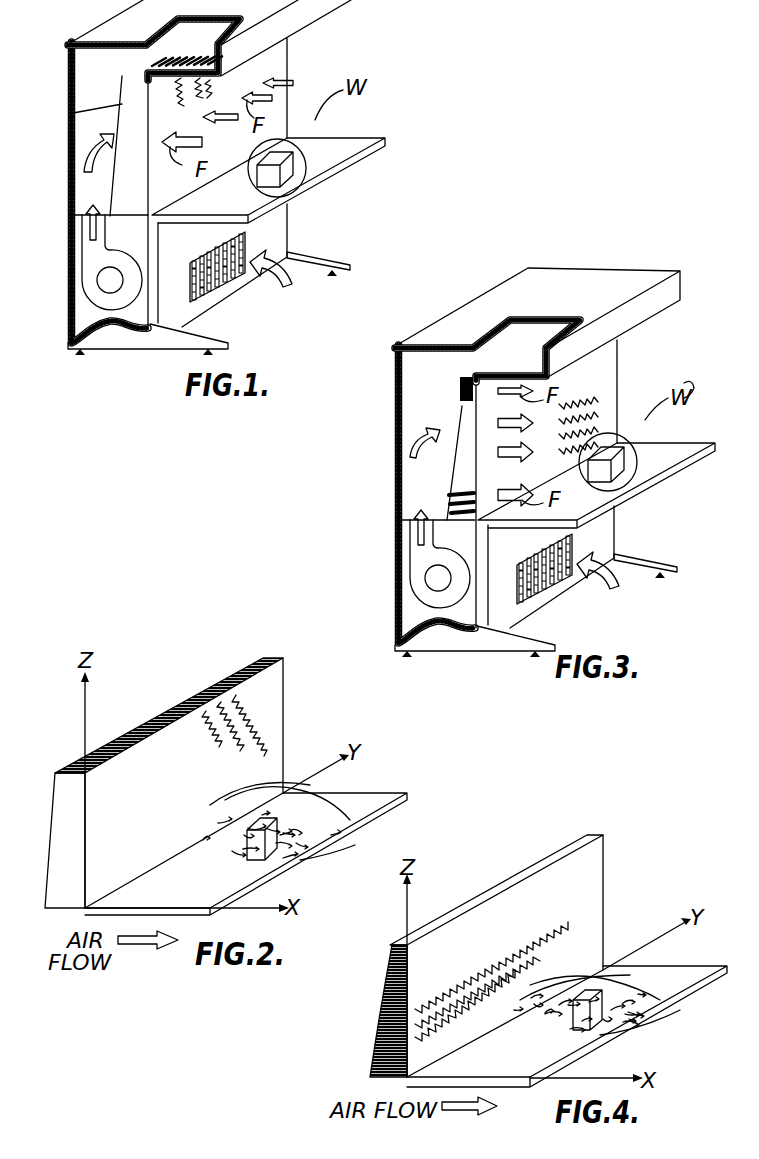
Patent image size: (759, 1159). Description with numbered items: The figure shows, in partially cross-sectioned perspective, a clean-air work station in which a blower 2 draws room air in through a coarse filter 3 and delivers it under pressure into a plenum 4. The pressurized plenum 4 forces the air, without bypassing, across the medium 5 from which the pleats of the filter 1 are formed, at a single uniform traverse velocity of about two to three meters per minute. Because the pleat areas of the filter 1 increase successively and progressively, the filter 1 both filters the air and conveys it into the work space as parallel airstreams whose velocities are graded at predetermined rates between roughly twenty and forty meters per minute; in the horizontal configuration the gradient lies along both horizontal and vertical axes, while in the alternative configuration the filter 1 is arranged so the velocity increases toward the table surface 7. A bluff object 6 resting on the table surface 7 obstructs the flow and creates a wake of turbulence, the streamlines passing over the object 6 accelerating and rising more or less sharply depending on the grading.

In FIG. 1, the filter 1 is at (68, 115).
In FIG. 3, the filter 1 is at (467, 413).
In FIG. 1, the blower 2 is at (80, 238).
In FIG. 3, the blower 2 is at (405, 548).
In FIG. 1, the coarse filter 3 is at (190, 300).
In FIG. 3, the coarse filter 3 is at (520, 600).
In FIG. 1, the plenum 4 is at (90, 183).
In FIG. 3, the plenum 4 is at (415, 487).
In FIG. 1, the medium 5 is at (140, 60).
In FIG. 3, the medium 5 is at (461, 386).
In FIG. 1, the bluff object 6 is at (306, 158).
In FIG. 3, the bluff object 6 is at (632, 458).
In FIG. 1, the table surface 7 is at (358, 147).
In FIG. 3, the table surface 7 is at (690, 440).